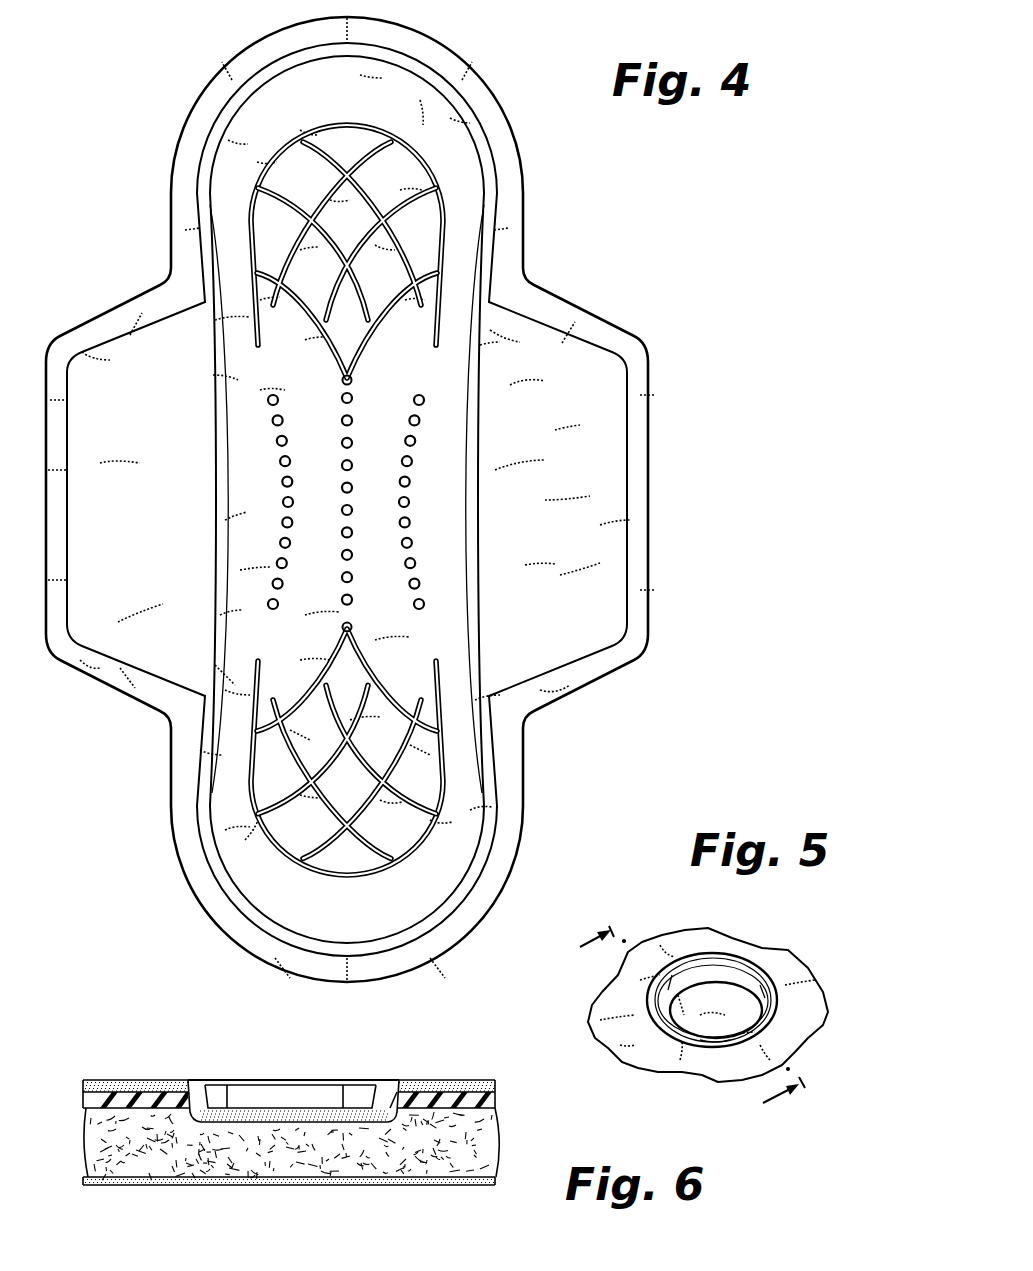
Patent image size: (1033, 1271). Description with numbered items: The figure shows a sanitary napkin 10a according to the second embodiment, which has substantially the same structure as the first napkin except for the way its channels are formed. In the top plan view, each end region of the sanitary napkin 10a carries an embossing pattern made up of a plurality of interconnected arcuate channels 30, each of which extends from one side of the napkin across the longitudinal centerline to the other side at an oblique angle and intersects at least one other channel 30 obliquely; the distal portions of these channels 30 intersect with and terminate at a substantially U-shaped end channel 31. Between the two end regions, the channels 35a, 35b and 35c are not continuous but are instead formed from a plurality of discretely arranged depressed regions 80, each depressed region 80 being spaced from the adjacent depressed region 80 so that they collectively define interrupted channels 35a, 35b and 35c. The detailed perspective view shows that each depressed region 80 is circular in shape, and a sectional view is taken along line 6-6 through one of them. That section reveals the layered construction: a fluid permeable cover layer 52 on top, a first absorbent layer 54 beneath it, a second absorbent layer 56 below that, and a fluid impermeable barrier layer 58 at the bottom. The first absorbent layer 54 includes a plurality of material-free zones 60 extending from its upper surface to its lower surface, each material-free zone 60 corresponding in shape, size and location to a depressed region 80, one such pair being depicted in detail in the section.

In FIG. 4, the sanitary napkin 10a is at (632, 222).
In FIG. 4, the interconnected arcuate channels 30 is at (280, 193).
In FIG. 4, the U-shaped end channel 31 is at (322, 128).
In FIG. 4, the channel 35a is at (362, 466).
In FIG. 4, the channel 35b is at (424, 477).
In FIG. 4, the channel 35c is at (300, 506).
In FIG. 4, the depressed region 80 is at (274, 602).
In FIG. 5, the depressed region 80 is at (722, 1005).
In FIG. 6, the depressed region 80 is at (297, 1108).
In FIG. 5, the section line 6- 6 is at (705, 1000).
In FIG. 6, the fluid permeable cover layer 52 is at (168, 1082).
In FIG. 6, the first absorbent layer 54 is at (125, 1095).
In FIG. 6, the second absorbent layer 56 is at (482, 1140).
In FIG. 6, the fluid impermeable barrier layer 58 is at (430, 1183).
In FIG. 6, the material-free zone 60 is at (380, 1083).